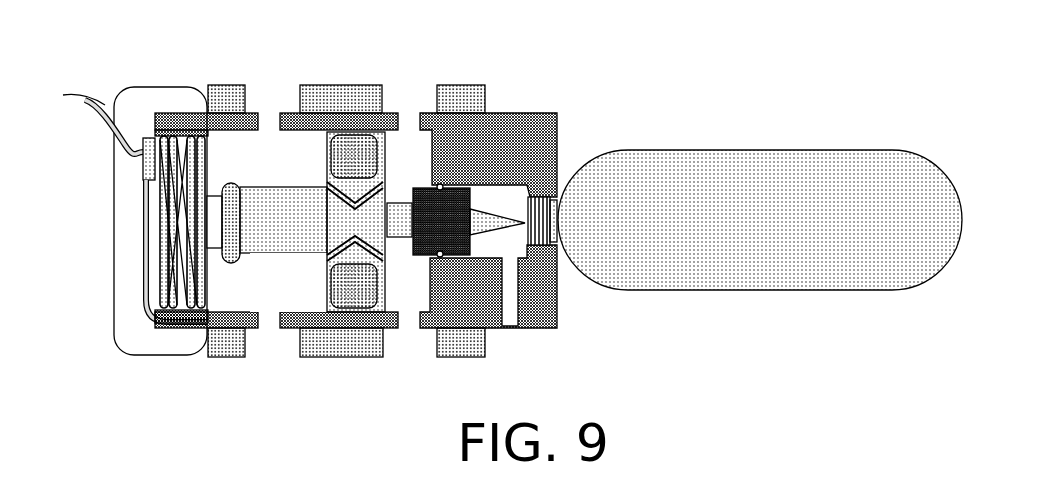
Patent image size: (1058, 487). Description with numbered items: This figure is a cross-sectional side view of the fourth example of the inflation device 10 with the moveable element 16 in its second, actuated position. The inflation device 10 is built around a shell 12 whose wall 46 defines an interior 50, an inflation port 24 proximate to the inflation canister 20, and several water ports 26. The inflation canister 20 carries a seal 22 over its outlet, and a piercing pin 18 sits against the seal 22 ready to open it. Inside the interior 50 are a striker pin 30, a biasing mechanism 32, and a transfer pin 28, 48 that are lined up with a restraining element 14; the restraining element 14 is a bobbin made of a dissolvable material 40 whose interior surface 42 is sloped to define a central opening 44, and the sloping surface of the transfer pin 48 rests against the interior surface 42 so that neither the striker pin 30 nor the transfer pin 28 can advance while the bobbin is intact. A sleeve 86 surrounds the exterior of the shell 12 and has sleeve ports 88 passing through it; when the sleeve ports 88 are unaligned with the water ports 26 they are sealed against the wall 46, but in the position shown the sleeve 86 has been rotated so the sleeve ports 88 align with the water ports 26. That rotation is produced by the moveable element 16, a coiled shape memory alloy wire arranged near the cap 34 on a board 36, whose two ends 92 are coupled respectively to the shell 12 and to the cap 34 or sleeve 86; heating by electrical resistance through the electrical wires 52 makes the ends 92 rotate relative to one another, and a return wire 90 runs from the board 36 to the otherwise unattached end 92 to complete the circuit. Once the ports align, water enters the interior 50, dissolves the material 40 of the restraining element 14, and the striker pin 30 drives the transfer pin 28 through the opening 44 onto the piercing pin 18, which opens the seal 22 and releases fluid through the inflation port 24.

The inflation device 10 is at (760, 190).
The shell 12 is at (557, 307).
The restraining element 14 is at (367, 132).
The moveable element 16 is at (173, 135).
The piercing pin 18 is at (441, 188).
The inflation canister 20 is at (713, 278).
The seal 22 is at (530, 197).
The inflation port 24 is at (516, 344).
The water ports 26 is at (269, 133).
The transfer pin 28 is at (356, 221).
The striker pin 30 is at (283, 220).
The biasing mechanism 32 is at (230, 184).
The cap 34 is at (145, 87).
The board 36 is at (143, 165).
The material 40 is at (354, 286).
The interior surface 42 is at (374, 244).
The opening 44 is at (376, 197).
The wall 46 is at (336, 130).
The transfer pin 48 is at (337, 183).
The interior 50 is at (288, 282).
The electrical wires 52 is at (93, 137).
The sleeve 86 is at (237, 358).
The sleeve ports 88 is at (262, 86).
The return wire 90 is at (143, 273).
The ends 92 is at (157, 140).